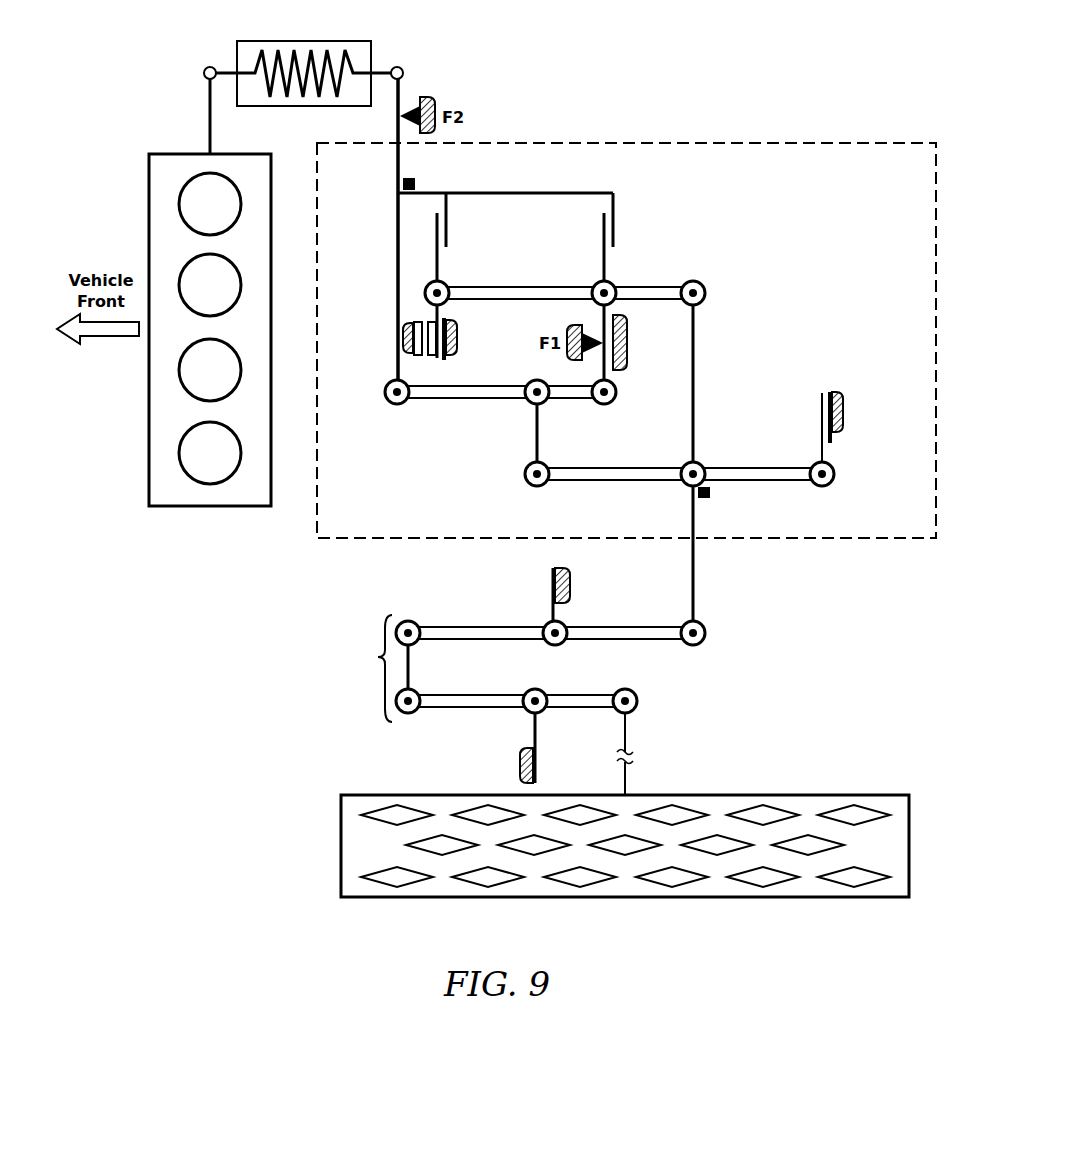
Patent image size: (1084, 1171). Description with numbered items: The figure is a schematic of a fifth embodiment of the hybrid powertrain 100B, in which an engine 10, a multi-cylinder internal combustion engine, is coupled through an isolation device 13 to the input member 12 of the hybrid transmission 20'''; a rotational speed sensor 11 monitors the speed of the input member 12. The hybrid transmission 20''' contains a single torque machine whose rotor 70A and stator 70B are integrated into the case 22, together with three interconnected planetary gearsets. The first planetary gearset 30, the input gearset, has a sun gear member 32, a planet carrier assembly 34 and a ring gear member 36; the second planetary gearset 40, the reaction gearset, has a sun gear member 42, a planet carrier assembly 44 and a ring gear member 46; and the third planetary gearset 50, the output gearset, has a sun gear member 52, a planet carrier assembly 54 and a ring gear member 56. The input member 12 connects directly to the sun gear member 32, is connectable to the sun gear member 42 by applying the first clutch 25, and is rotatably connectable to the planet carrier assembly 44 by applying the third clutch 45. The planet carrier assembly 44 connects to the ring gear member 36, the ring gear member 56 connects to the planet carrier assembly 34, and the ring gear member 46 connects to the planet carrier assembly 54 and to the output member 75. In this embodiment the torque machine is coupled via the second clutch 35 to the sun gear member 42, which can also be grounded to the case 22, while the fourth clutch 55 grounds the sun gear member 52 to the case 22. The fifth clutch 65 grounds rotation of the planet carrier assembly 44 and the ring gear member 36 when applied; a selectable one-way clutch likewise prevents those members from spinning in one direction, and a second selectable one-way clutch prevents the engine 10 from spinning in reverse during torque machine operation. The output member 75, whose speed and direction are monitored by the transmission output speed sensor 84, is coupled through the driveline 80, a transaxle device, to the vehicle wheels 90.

The engine 10 is at (158, 146).
The hybrid powertrain 100B is at (160, 510).
The rotational speed sensor 11 is at (426, 182).
The input member 12 is at (402, 88).
The isolation device 13 is at (372, 63).
The hybrid transmission 20''' is at (569, 367).
The case 22 is at (433, 100).
The clutch C1 25 is at (455, 243).
The first planetary gearset 30 is at (388, 378).
The sun gear member 32 is at (390, 398).
The planet carrier assembly 34 is at (545, 400).
The clutch C2 35 is at (463, 333).
The ring gear member 36 is at (612, 400).
The second planetary gearset 40 is at (418, 293).
The sun gear member 42 is at (448, 287).
The planet carrier assembly 44 is at (616, 287).
The clutch C3 45 is at (622, 243).
The ring gear member 46 is at (704, 287).
The third planetary gearset 50 is at (524, 464).
The sun gear member 52 is at (833, 480).
The planet carrier assembly 54 is at (704, 468).
The clutch C4 55 is at (850, 417).
The ring gear member 56 is at (528, 482).
The clutch C5 65 is at (614, 368).
The rotor 70A is at (432, 357).
The stator 70B is at (419, 357).
The output member 75 is at (700, 575).
The driveline 80 is at (378, 657).
The transmission output speed sensor 84 is at (722, 496).
The vehicle wheels 90 is at (328, 822).